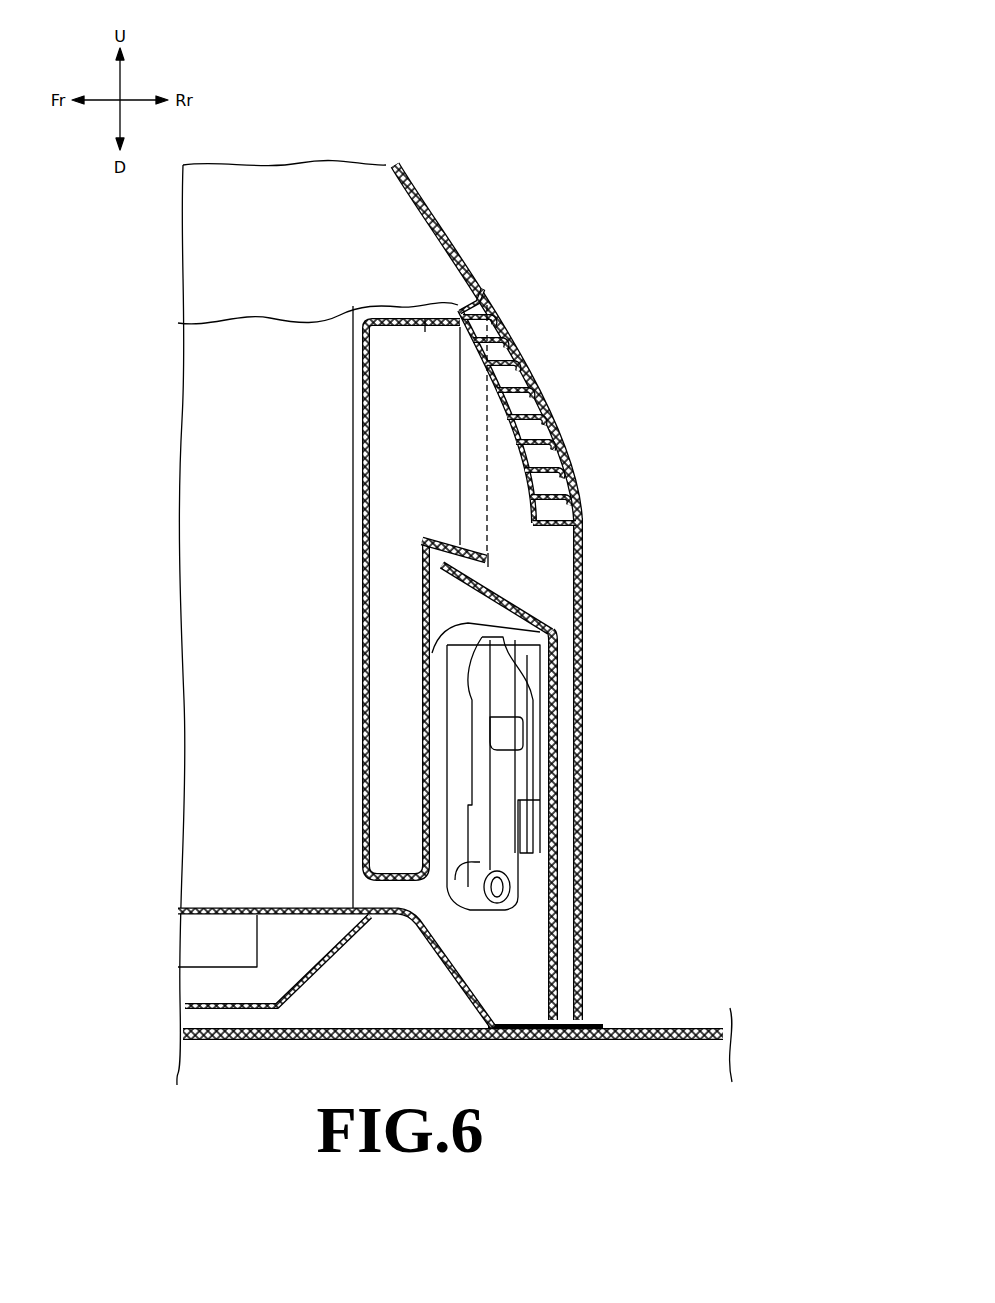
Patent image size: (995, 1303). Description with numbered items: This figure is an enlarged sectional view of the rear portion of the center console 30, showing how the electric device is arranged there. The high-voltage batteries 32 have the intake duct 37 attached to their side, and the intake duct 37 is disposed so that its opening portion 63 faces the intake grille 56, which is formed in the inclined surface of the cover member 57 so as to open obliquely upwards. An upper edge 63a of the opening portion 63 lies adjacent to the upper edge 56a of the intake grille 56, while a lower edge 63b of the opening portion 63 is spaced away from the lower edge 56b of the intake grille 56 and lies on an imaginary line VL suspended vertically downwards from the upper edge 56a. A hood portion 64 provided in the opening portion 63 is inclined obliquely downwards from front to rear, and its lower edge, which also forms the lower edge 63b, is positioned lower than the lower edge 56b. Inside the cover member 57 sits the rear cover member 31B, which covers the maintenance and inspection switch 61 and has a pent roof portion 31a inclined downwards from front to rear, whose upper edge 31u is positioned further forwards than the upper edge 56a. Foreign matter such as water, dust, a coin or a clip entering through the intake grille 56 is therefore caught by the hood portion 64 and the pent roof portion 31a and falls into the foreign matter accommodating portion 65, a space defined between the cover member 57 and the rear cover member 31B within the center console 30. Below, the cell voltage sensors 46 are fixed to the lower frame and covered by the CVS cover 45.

The center console 30 is at (462, 147).
The high-voltage batteries 32 is at (205, 690).
The intake duct 37 is at (362, 471).
The CVS cover 45 is at (213, 1000).
The cell voltage sensors 46 is at (207, 938).
The intake grille 56 is at (542, 370).
The upper edge of the intake grille 56a is at (488, 302).
The lower edge of the intake grille 56b is at (540, 519).
The cover member 57 is at (584, 888).
The maintenance and inspection switch 61 is at (537, 760).
The opening portion 63 is at (440, 449).
The upper edge of the opening portion 63a is at (425, 318).
The lower edge of the opening portion 63b is at (490, 560).
The hood portion 64 is at (458, 525).
The foreign matter accommodating portion 65 is at (566, 822).
The pent roof portion 31a is at (505, 600).
The rear cover member 31B is at (559, 690).
The upper edge of the pent roof portion 31u is at (440, 588).
The imaginary line VL is at (490, 461).